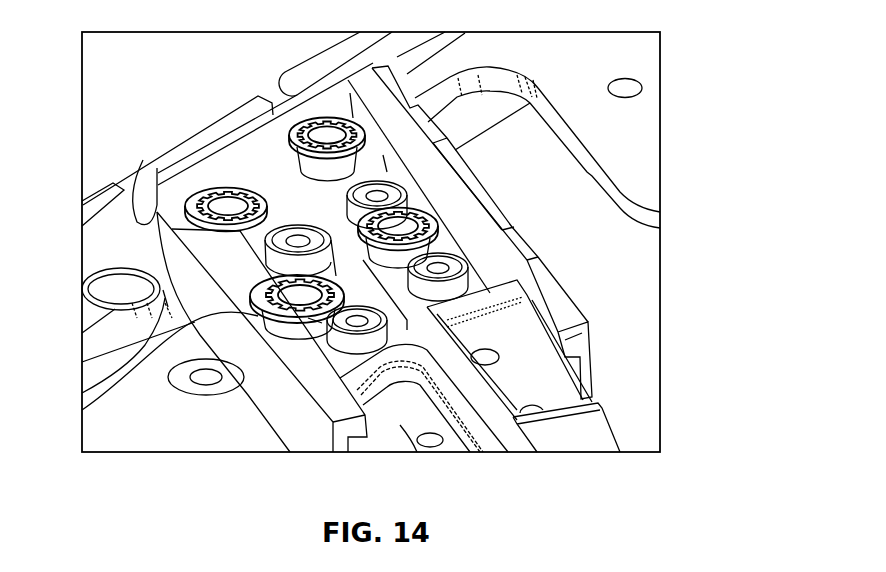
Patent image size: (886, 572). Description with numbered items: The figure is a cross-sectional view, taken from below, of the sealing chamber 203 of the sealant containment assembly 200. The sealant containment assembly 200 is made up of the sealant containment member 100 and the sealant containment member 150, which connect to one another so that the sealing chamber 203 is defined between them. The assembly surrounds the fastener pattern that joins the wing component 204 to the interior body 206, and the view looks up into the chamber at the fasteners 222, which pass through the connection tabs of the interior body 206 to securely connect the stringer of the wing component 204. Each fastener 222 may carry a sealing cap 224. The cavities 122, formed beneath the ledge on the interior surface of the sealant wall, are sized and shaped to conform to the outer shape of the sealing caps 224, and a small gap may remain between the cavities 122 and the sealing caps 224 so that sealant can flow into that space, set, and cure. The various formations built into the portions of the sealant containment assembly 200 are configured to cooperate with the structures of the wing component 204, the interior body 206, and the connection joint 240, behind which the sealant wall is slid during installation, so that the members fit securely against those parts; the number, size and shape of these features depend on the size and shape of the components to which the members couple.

The sealant containment member 100 is at (273, 402).
The cavities 122 is at (83, 410).
The sealant containment member 150 is at (550, 267).
The sealant containment assembly 200 is at (280, 453).
The sealing chamber 203 is at (363, 353).
The wing component 204 is at (430, 200).
The interior body 206 is at (642, 62).
The fastener 222 is at (220, 210).
The sealing cap 224 is at (187, 202).
The connection joint 240 is at (402, 425).